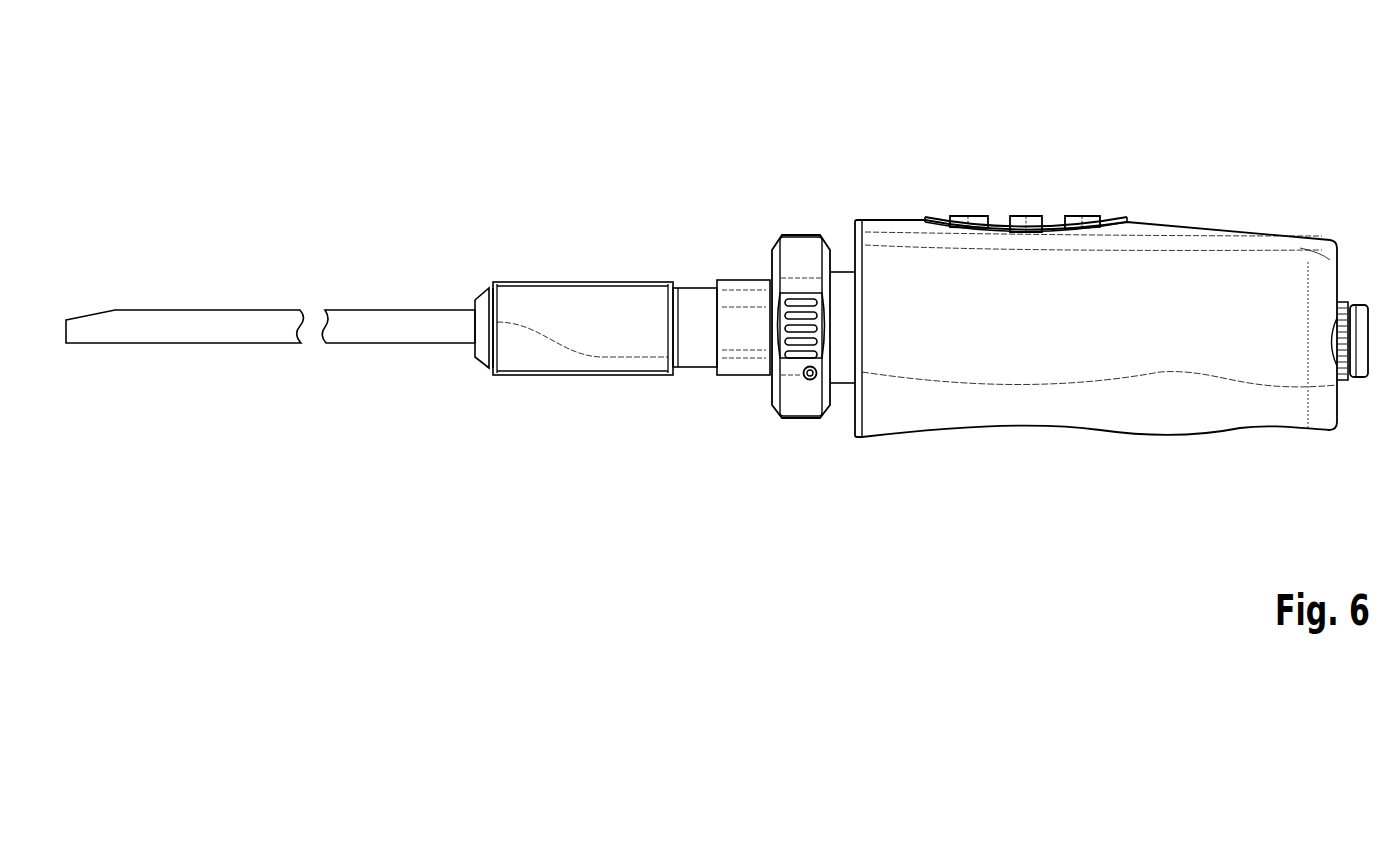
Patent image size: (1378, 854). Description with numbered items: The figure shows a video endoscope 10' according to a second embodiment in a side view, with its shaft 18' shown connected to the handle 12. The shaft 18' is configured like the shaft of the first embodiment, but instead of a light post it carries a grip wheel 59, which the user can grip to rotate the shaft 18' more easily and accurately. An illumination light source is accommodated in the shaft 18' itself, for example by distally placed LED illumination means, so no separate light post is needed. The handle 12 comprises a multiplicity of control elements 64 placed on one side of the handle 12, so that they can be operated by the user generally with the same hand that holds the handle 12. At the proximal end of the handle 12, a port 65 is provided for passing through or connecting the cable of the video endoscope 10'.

The video endoscope 10' is at (721, 220).
The handle 12 is at (1227, 178).
The shaft 18' is at (280, 215).
The grip wheel 59 is at (797, 235).
The control elements 64 is at (965, 215).
The port 65 is at (1356, 305).